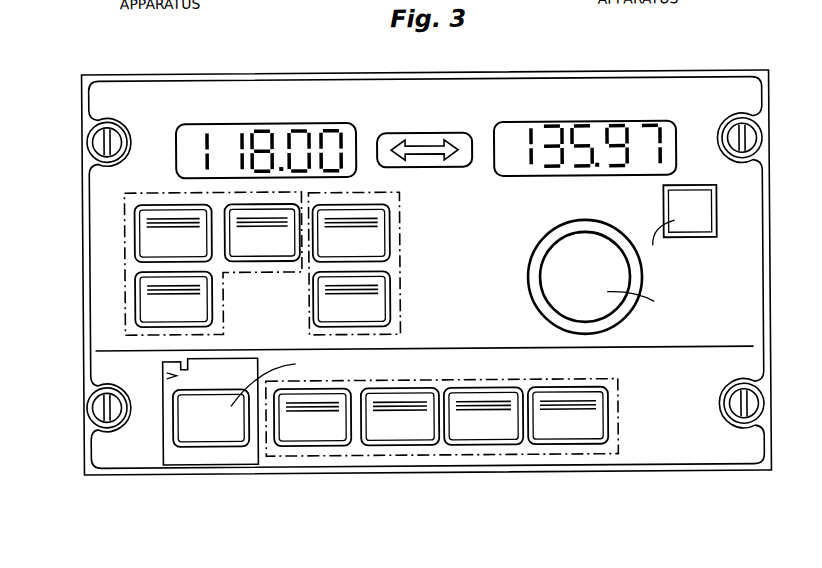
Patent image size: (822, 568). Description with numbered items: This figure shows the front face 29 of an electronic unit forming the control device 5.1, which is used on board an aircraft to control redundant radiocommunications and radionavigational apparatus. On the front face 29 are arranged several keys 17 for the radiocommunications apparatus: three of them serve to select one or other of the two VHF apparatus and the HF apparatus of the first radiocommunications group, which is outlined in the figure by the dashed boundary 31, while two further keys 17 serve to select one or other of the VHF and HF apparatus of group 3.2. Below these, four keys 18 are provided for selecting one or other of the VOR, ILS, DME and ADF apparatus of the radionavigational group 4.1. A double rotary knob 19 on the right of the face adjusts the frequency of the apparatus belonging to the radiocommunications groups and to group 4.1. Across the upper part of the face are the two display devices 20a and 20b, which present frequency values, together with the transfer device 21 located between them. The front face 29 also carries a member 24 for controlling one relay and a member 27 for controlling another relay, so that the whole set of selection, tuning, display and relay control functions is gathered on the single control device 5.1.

The control device 5.1 is at (158, 63).
The front face 29 is at (712, 88).
The display device 20b is at (225, 137).
The display device 20a is at (576, 125).
The transfer device 21 is at (428, 135).
The first group of radio selector keys 31 is at (128, 197).
The group of radiocommunications apparatus 3.2 is at (400, 198).
The keys 17 is at (143, 293).
The double rotary knob 19 is at (562, 257).
The member for controlling relay 24 is at (707, 219).
The member for controlling relay 27 is at (215, 435).
The group of radionavigational apparatus 4.1 is at (310, 453).
The keys 18 is at (343, 437).